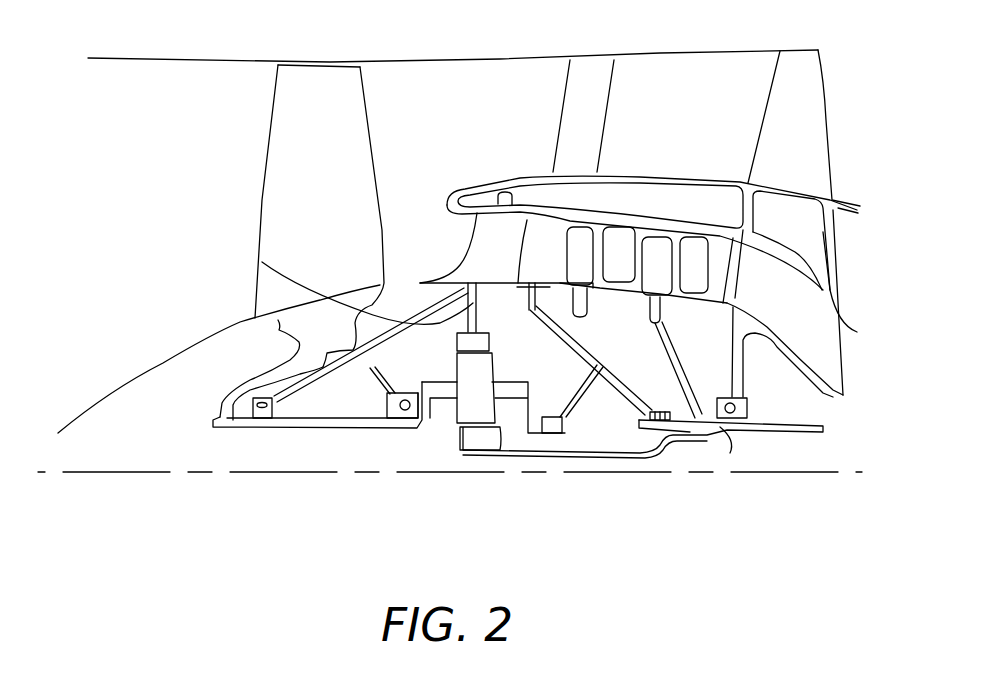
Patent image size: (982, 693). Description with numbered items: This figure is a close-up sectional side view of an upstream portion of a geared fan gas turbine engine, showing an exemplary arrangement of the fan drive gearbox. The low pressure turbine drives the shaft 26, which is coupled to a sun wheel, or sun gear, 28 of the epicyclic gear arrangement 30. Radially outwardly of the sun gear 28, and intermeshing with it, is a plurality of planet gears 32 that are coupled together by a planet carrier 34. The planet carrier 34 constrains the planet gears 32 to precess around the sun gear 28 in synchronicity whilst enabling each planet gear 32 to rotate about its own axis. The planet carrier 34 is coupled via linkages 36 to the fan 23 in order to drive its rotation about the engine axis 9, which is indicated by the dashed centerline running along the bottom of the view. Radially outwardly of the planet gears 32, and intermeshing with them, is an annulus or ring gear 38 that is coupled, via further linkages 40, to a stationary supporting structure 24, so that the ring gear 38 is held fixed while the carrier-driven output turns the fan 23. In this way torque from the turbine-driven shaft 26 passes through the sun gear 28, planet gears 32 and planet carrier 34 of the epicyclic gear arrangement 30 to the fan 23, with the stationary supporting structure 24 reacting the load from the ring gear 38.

The engine axis 9 is at (152, 473).
The fan 23 is at (278, 172).
The stationary supporting structure 24 is at (478, 250).
The shaft 26 is at (603, 453).
The sun gear 28 is at (513, 453).
The epicyclic gear arrangement 30 is at (445, 420).
The planet gears 32 is at (452, 420).
The planet carrier 34 is at (513, 450).
The linkages 36 is at (433, 420).
The ring gear 38 is at (475, 338).
The linkages 40 is at (467, 283).